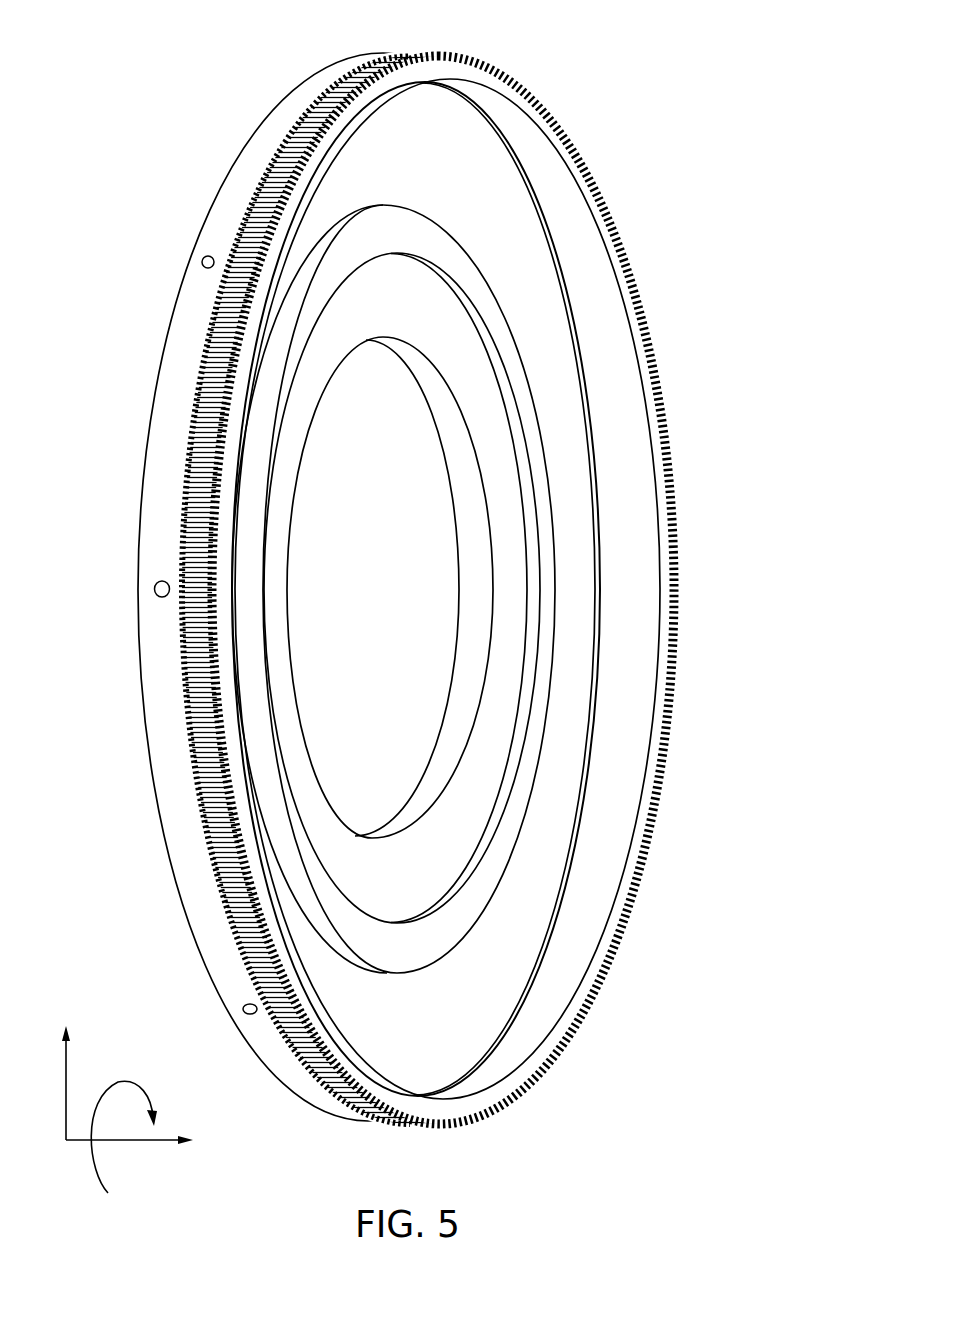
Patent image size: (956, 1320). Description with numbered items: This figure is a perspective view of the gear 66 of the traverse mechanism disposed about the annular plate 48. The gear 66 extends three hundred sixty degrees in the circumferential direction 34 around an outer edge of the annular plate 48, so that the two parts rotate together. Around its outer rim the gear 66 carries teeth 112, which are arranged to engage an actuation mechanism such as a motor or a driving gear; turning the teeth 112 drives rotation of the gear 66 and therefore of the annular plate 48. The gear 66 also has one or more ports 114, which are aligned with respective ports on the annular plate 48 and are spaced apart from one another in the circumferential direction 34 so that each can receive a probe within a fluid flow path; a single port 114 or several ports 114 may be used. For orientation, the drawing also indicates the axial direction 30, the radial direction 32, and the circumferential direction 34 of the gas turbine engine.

The teeth 112 is at (437, 52).
The gear 66 is at (551, 110).
The annular plate 48 is at (593, 178).
The ports 114 is at (203, 257).
The axial direction 30 is at (125, 1143).
The radial direction 32 is at (67, 1090).
The circumferential direction 34 is at (92, 1162).